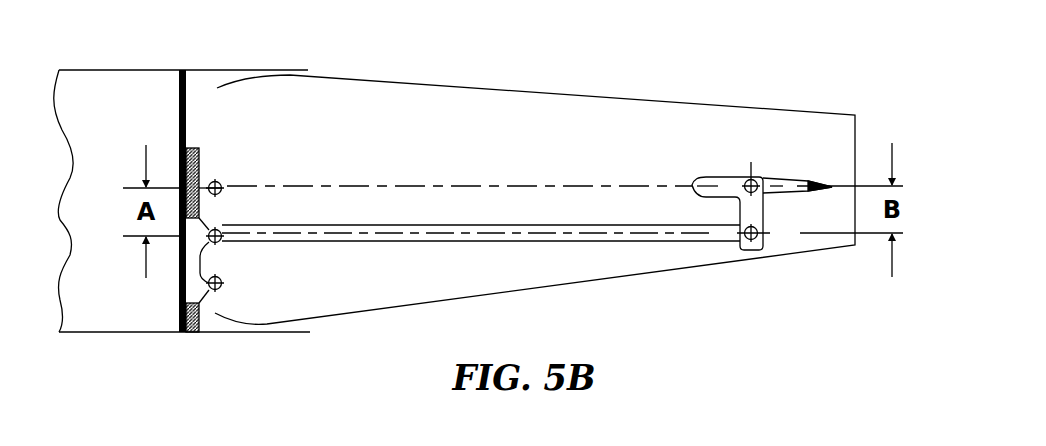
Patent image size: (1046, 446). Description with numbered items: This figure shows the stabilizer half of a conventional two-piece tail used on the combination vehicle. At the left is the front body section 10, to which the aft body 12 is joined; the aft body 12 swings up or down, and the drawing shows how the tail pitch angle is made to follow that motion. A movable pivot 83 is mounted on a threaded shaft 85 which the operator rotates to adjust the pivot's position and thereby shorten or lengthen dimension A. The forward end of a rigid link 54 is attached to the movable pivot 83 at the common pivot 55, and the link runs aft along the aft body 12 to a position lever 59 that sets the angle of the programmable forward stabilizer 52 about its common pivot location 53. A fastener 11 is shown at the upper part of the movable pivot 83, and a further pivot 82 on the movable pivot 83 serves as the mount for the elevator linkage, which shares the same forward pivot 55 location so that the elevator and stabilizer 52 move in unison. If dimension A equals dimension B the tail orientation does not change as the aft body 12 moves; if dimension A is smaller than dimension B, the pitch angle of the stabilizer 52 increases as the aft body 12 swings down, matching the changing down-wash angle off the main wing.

The front body section 10 is at (82, 70).
The fastener bolt 11 is at (219, 183).
The aft body 12 is at (480, 88).
The programmable forward stabilizer 52 is at (713, 177).
The common pivot location 53 is at (757, 182).
The rigid link 54 is at (523, 241).
The common pivot 55 is at (219, 232).
The position lever 59 is at (767, 250).
The pivot 82 is at (222, 283).
The movable pivot 83 is at (179, 282).
The threaded shaft 85 is at (183, 148).